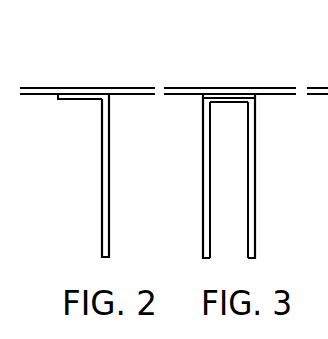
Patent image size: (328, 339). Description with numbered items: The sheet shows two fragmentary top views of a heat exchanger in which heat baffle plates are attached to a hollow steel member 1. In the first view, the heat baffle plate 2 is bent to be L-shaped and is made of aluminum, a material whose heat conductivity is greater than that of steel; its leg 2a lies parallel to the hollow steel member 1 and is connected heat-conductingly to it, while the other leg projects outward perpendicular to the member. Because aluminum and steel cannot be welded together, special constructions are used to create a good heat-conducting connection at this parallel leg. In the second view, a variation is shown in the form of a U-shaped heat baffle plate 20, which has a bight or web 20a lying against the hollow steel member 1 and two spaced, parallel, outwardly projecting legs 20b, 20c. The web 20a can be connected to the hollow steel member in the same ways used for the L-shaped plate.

In FIG. 2, the hollow steel member 1 is at (92, 88).
In FIG. 3, the hollow steel member 1 is at (240, 87).
In FIG. 2, the heat baffle plate 2 is at (102, 222).
In FIG. 2, the leg 2a is at (100, 92).
In FIG. 3, the U-shaped heat baffle plate 20 is at (202, 233).
In FIG. 3, the web 20a is at (246, 92).
In FIG. 3, the leg 20b is at (203, 148).
In FIG. 3, the leg 20c is at (256, 147).